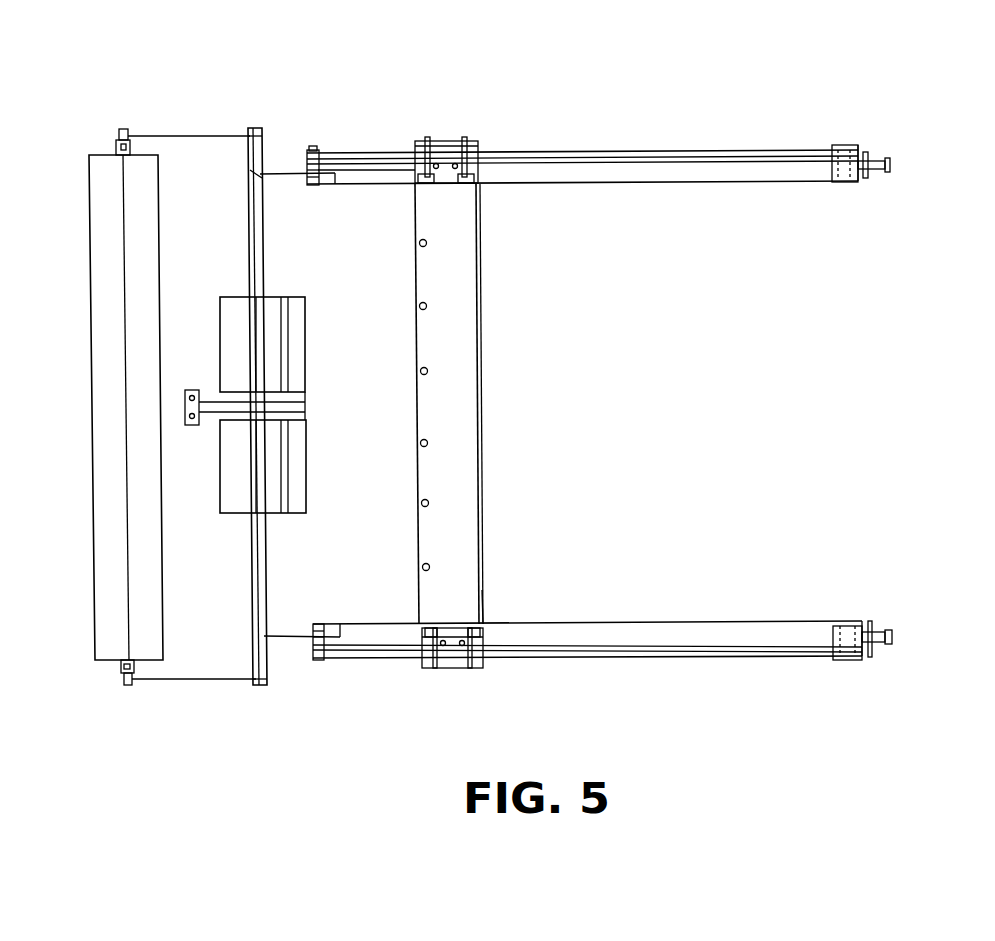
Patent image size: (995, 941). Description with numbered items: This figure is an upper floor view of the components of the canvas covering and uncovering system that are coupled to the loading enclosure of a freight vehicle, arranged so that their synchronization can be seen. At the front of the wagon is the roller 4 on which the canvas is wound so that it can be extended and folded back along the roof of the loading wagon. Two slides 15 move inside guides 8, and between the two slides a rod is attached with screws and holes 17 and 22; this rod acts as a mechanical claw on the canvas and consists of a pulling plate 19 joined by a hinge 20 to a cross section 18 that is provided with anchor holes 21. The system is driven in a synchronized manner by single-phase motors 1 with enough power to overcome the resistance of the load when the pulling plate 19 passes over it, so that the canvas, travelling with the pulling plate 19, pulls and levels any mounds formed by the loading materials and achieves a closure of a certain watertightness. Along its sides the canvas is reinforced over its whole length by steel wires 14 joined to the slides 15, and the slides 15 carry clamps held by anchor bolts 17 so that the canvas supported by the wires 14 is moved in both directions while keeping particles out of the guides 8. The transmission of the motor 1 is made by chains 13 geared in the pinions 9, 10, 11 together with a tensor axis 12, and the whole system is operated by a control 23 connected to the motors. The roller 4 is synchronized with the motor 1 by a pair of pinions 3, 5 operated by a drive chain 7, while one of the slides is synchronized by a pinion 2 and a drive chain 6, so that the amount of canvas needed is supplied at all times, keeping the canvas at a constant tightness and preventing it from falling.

The single-phase motor 1 is at (308, 457).
The pinion 2 is at (252, 176).
The pinion 3 is at (250, 127).
The roller 4 is at (92, 435).
The pinion 5 is at (123, 128).
The drive chain 6 is at (288, 170).
The drive chain 7 is at (183, 135).
The guide 8 is at (645, 658).
The pinion 9 is at (313, 180).
The pinion 10 is at (320, 660).
The pinion 11 is at (838, 660).
The tensor axis 12 is at (885, 630).
The chain 13 is at (538, 152).
The steel wire 14 is at (367, 148).
The slide 15 is at (441, 138).
The screws and holes 17 is at (428, 138).
The cross section 18 is at (437, 403).
The pulling plate 19 is at (483, 403).
The hinge 20 is at (485, 618).
The anchor hole 21 is at (420, 510).
The screws and holes 22 is at (435, 670).
The control 23 is at (190, 390).